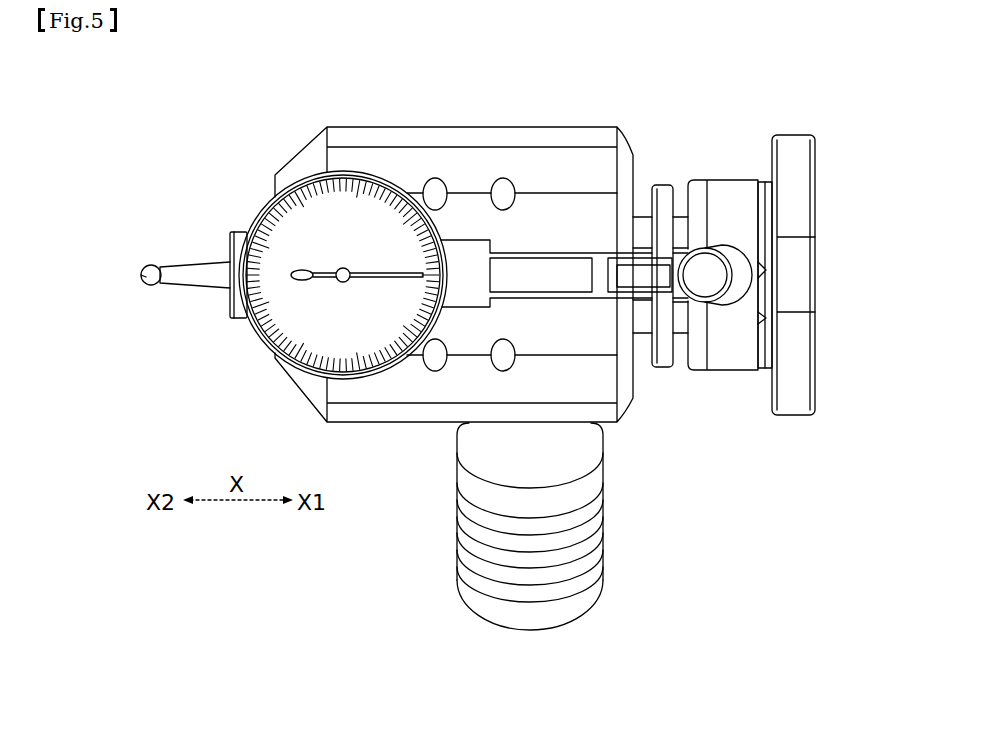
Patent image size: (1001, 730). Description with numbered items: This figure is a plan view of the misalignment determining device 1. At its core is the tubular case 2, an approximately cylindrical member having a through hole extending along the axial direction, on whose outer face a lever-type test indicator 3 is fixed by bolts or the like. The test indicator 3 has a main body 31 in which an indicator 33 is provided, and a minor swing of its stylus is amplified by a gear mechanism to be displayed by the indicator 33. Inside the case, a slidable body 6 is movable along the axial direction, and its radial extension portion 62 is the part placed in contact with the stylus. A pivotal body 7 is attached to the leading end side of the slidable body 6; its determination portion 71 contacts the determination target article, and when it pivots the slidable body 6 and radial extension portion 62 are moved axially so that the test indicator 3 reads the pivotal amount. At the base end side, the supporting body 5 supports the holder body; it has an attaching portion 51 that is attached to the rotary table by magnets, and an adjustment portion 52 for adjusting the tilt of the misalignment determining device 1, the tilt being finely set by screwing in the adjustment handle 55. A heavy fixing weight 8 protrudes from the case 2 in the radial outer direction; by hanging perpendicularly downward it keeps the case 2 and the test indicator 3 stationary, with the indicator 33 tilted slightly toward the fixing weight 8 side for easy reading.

The misalignment determining device 1 is at (690, 117).
The case 2 is at (530, 125).
The test indicator 3 is at (258, 210).
The main body 31 is at (472, 263).
The indicator 33 is at (258, 338).
The supporting body 5 is at (817, 293).
The attaching portion 51 is at (793, 145).
The adjustment portion 52 is at (732, 362).
The adjustment handle 55 is at (733, 258).
The slidable body 6 is at (642, 333).
The radial extension portion 62 is at (660, 185).
The pivotal body 7 is at (228, 245).
The determination portion 71 is at (150, 265).
The fixing weight 8 is at (603, 530).